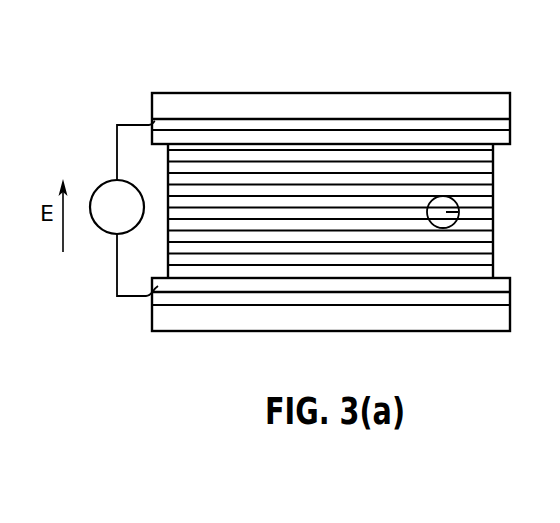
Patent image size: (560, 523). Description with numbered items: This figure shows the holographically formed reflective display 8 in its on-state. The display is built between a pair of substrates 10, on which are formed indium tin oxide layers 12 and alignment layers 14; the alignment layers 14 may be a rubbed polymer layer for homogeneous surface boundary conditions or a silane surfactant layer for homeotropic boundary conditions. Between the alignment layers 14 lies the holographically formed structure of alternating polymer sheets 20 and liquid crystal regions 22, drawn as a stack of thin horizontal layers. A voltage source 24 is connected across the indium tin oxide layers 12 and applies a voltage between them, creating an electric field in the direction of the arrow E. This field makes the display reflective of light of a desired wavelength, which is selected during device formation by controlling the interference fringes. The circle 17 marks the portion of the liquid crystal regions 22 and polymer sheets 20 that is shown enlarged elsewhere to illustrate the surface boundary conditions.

The holographically formed reflective display 8 is at (432, 76).
The substrates 10 is at (495, 94).
The indium tin oxide layers 12 is at (151, 120).
The alignment layers 14 is at (507, 143).
The circle 17 is at (459, 213).
The polymer sheets 20 is at (485, 245).
The liquid crystal regions 22 is at (487, 167).
The voltage source 24 is at (112, 180).